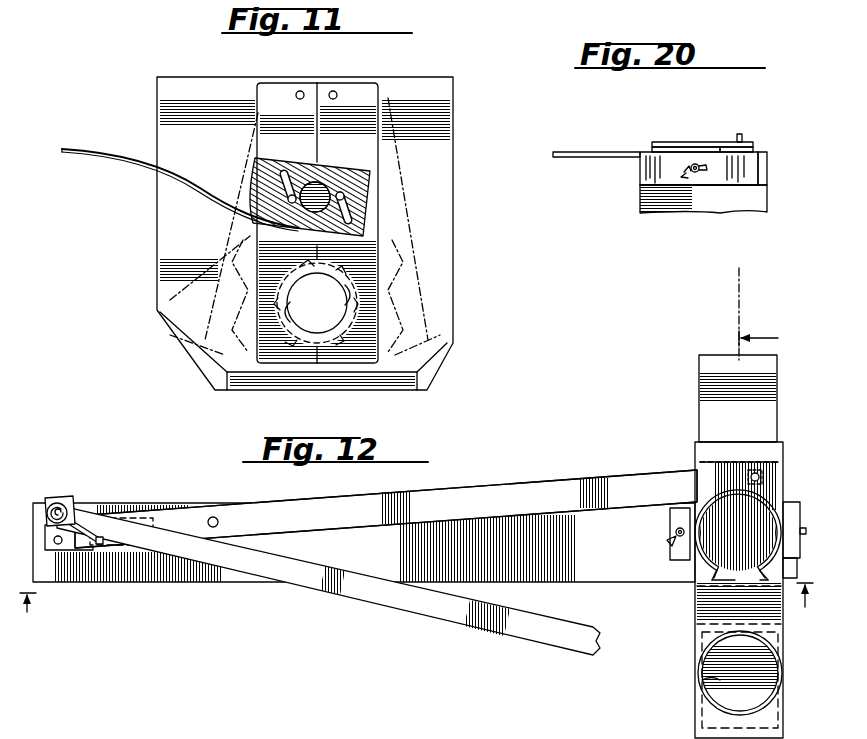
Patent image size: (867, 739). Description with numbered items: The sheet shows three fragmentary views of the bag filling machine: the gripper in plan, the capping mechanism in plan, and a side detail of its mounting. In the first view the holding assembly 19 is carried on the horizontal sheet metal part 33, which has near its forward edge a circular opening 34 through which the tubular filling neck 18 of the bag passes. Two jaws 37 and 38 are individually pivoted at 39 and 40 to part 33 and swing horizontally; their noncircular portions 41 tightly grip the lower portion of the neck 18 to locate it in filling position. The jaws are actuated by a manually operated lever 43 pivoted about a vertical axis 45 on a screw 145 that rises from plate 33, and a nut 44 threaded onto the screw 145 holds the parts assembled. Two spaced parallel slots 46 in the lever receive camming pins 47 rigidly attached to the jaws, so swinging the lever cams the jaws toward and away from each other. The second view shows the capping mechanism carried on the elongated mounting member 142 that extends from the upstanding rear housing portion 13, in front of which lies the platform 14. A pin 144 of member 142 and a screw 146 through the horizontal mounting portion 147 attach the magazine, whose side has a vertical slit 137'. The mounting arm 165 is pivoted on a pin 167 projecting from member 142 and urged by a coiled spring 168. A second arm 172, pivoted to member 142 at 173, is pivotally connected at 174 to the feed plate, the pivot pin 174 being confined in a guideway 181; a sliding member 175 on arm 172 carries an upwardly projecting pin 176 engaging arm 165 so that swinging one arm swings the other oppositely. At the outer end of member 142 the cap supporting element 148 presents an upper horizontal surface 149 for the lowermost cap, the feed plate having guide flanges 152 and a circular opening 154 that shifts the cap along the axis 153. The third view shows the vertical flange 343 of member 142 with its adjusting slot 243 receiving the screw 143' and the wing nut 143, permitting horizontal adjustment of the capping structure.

In FIG. 11, the sheet metal part 33 is at (445, 108).
In FIG. 11, the jaw 37 is at (292, 363).
In FIG. 11, the jaw 38 is at (356, 363).
In FIG. 11, the pivot 39 is at (300, 91).
In FIG. 11, the pivot 40 is at (333, 91).
In FIG. 11, the circular opening 34 is at (284, 300).
In FIG. 11, the filling neck 18 is at (340, 316).
In FIG. 11, the jaw portions 41 is at (283, 326).
In FIG. 11, the manually operated lever 43 is at (100, 140).
In FIG. 11, the vertical axis 45 is at (290, 214).
In FIG. 12, the screw 145 is at (800, 506).
In FIG. 11, the nut 44 is at (322, 186).
In FIG. 11, the slots 46 is at (273, 182).
In FIG. 11, the camming pins 47 is at (292, 203).
In FIG. 11, the holding assembly 19 is at (398, 184).
In FIG. 20, the upstanding portion 13 is at (735, 214).
In FIG. 12, the upstanding portion 13 is at (420, 615).
In FIG. 20, the mounting member 142 is at (608, 158).
In FIG. 12, the mounting member 142 is at (383, 556).
In FIG. 20, the vertical flange 343 is at (637, 185).
In FIG. 20, the adjusting slot 243 is at (665, 196).
In FIG. 20, the second elongated arm 172 is at (662, 158).
In FIG. 12, the second elongated arm 172 is at (558, 484).
In FIG. 20, the mounting arm 165 is at (708, 143).
In FIG. 12, the mounting arm 165 is at (427, 610).
In FIG. 20, the wing nut 143 is at (701, 205).
In FIG. 20, the screw 143' is at (662, 210).
In FIG. 12, the sliding member 175 is at (152, 515).
In FIG. 12, the pivot 173 is at (215, 518).
In FIG. 12, the pin 176 is at (128, 523).
In FIG. 12, the coiled spring 168 is at (74, 510).
In FIG. 12, the pin 167 is at (60, 502).
In FIG. 12, the upper horizontal surface 149 is at (777, 412).
In FIG. 12, the cap supporting element 148 is at (779, 392).
In FIG. 12, the axis 153 is at (741, 294).
In FIG. 12, the platform 14 is at (776, 337).
In FIG. 12, the vertical slit 137' is at (716, 590).
In FIG. 12, the guideway 181 is at (700, 470).
In FIG. 12, the pivot pin 174 is at (760, 475).
In FIG. 12, the pin 144 is at (807, 532).
In FIG. 12, the screw 146 is at (677, 540).
In FIG. 12, the horizontal second mounting portion 147 is at (668, 548).
In FIG. 12, the guide flanges 152 is at (700, 672).
In FIG. 12, the circular opening 154 is at (720, 690).